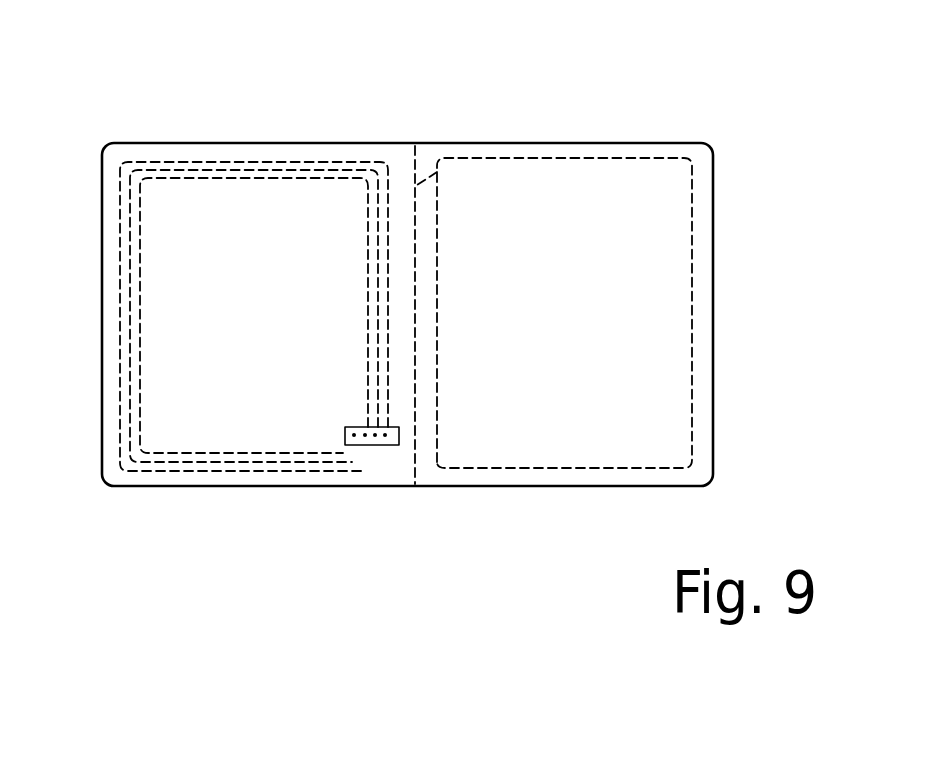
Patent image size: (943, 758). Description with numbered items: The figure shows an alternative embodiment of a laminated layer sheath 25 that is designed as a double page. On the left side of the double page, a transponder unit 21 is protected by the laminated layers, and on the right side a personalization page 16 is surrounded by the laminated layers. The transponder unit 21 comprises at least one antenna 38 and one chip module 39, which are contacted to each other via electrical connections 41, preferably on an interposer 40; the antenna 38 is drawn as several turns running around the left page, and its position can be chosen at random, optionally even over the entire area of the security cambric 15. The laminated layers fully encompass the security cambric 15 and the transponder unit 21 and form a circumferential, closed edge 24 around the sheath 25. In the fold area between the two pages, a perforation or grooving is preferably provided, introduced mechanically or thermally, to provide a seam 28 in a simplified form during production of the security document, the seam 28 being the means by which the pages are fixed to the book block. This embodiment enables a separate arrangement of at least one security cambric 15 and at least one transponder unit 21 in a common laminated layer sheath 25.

The security cambric 15 is at (620, 128).
The transponder unit 21 is at (240, 140).
The antenna 38 is at (333, 170).
The chip module 39 is at (354, 443).
The interposer 40 is at (385, 443).
The electrical connections 41 is at (375, 443).
The personalization page 16 is at (400, 153).
The laminated layer sheath 25 is at (684, 134).
The circumferential closed edge 24 is at (612, 473).
The seam 28 is at (438, 172).